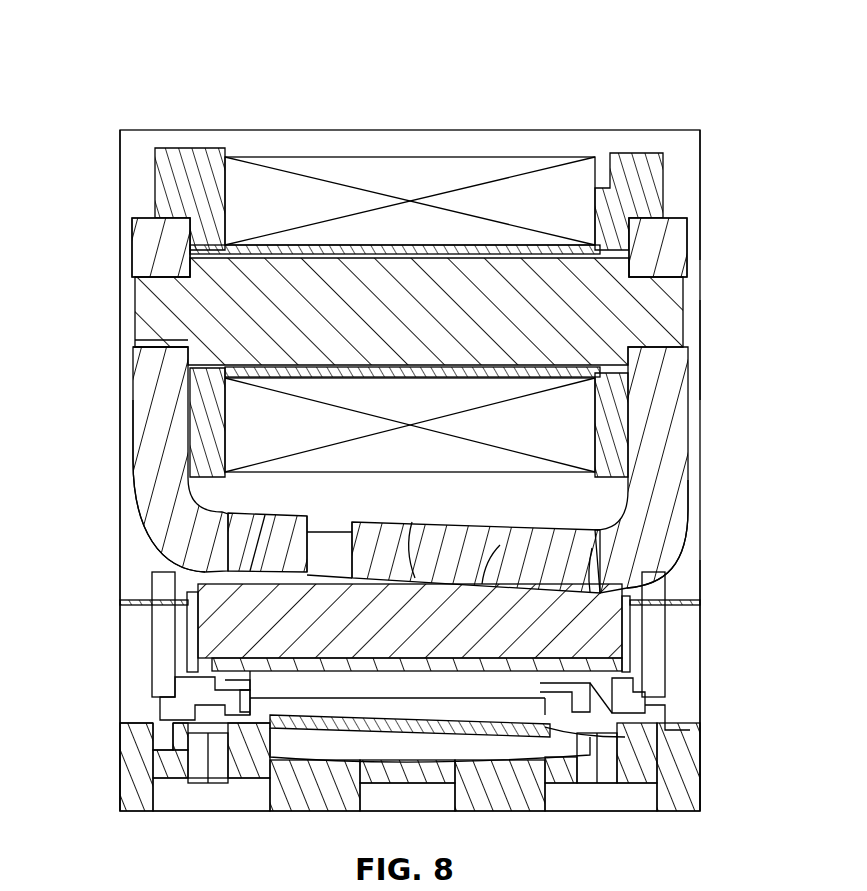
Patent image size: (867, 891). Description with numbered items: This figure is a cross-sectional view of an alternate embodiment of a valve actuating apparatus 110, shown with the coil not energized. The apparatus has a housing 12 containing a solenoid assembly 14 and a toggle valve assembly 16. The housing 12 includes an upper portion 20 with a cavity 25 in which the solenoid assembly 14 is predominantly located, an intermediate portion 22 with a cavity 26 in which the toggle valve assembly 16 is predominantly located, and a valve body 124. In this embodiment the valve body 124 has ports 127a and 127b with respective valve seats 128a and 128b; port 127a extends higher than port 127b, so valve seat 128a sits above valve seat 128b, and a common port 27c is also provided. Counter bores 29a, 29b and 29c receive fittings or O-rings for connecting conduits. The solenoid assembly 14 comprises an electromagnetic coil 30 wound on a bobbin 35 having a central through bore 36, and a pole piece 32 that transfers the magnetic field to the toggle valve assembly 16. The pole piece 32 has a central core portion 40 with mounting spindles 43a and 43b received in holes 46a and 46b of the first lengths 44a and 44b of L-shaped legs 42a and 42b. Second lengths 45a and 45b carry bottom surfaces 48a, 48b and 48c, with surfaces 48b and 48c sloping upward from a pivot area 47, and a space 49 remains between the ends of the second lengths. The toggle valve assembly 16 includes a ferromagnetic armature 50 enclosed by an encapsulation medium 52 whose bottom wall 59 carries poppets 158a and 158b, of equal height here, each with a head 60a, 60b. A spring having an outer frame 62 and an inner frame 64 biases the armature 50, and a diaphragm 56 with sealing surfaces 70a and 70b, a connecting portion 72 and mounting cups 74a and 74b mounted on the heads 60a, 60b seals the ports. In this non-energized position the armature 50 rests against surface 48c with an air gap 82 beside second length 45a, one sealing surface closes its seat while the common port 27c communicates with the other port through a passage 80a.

The valve actuating apparatus 110 is at (163, 97).
The housing 12 is at (121, 305).
The solenoid assembly 14 is at (688, 203).
The toggle valve assembly 16 is at (691, 651).
The upper portion 20 is at (683, 553).
The intermediate portion 22 is at (683, 702).
The cavity 25 is at (341, 564).
The cavity 26 is at (320, 697).
The port 27c is at (420, 772).
The counter bore 29a is at (257, 806).
The counter bore 29b is at (548, 790).
The counter bore 29c is at (410, 775).
The electromagnetic coil 30 is at (428, 194).
The pole piece 32 is at (700, 343).
The bobbin 35 is at (667, 176).
The central through bore 36 is at (690, 289).
The central core portion 40 is at (137, 330).
The leg 42a is at (158, 456).
The leg 42b is at (682, 390).
The mounting spindle 43a is at (130, 262).
The mounting spindle 43b is at (672, 318).
The first length 44a is at (136, 405).
The first length 44b is at (684, 418).
The second length 45a is at (266, 530).
The second length 45b is at (450, 530).
The hole 46a is at (138, 349).
The hole 46b is at (683, 283).
The pivot area 47 is at (500, 545).
The bottom surface 48a is at (255, 550).
The bottom surface 48b is at (412, 522).
The bottom surface 48c is at (592, 548).
The space 49 is at (332, 527).
The armature 50 is at (205, 642).
The encapsulation medium 52 is at (200, 633).
The diaphragm 56 is at (205, 716).
The bottom wall 59 is at (358, 668).
The head 60a is at (185, 712).
The head 60b is at (655, 722).
The outer frame 62 is at (126, 600).
The inner frame 64 is at (640, 601).
The sealing surface 70a is at (148, 795).
The sealing surface 70b is at (660, 795).
The connecting portion 72 is at (352, 728).
The mounting cup 74a is at (238, 698).
The mounting cup 74b is at (580, 690).
The passage 80a is at (440, 760).
The air gap 82 is at (232, 576).
The valve body 124 is at (122, 770).
The port 127a is at (196, 796).
The port 127b is at (606, 795).
The valve seat 128a is at (211, 767).
The valve seat 128b is at (595, 733).
The poppet 158a is at (190, 688).
The poppet 158b is at (635, 716).